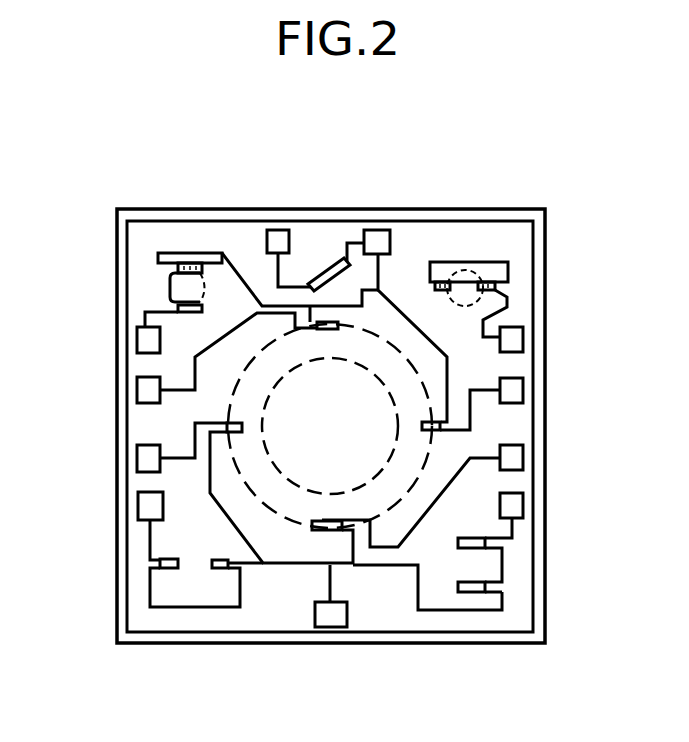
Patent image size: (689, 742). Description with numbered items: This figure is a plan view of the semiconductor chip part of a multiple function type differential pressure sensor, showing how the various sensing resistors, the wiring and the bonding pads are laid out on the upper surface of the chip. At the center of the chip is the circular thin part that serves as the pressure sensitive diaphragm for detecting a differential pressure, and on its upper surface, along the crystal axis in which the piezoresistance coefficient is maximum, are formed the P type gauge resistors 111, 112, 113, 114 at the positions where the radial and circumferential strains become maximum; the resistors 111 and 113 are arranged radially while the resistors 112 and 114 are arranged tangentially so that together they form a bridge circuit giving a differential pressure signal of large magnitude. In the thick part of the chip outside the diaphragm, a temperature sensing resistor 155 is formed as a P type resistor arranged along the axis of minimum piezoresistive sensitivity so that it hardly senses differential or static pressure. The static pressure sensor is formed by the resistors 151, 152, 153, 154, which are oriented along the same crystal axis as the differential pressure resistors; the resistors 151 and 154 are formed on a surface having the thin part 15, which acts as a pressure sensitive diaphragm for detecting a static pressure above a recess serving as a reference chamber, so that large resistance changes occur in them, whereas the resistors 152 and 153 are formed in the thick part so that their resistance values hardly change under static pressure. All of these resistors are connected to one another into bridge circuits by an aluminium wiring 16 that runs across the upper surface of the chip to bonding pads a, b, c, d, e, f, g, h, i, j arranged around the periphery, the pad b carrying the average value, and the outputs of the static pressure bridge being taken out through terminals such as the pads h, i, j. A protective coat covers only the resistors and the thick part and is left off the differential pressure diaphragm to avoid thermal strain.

The thin part 15 is at (183, 290).
The aluminium wiring 16 is at (207, 253).
The differential pressure resistor 111 is at (433, 426).
The differential pressure resistor 112 is at (312, 527).
The differential pressure resistor 113 is at (228, 426).
The differential pressure resistor 114 is at (360, 328).
The static pressure resistor 151 is at (505, 300).
The static pressure resistor 152 is at (467, 592).
The static pressure resistor 153 is at (220, 568).
The static pressure resistor 154 is at (190, 263).
The temperature sensing resistor 155 is at (325, 270).
The bonding pad a is at (377, 232).
The bonding pad b is at (333, 620).
The bonding pad c is at (278, 232).
The bonding pad d is at (510, 390).
The bonding pad e is at (510, 457).
The bonding pad f is at (147, 391).
The bonding pad g is at (147, 459).
The bonding pad h is at (147, 506).
The bonding pad i is at (510, 505).
The bonding pad j is at (147, 340).